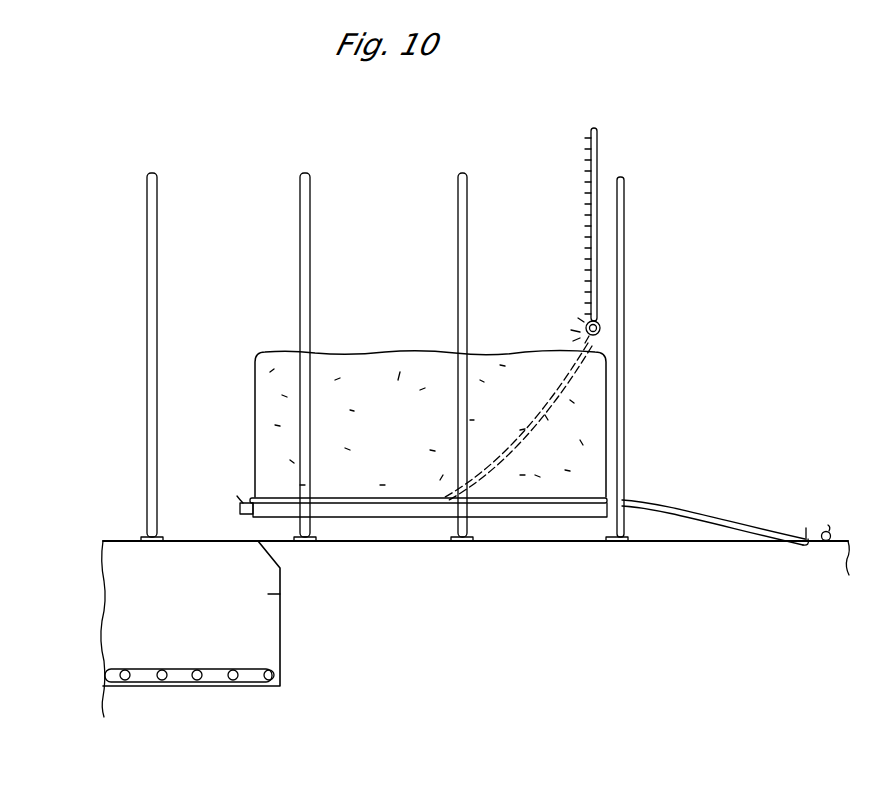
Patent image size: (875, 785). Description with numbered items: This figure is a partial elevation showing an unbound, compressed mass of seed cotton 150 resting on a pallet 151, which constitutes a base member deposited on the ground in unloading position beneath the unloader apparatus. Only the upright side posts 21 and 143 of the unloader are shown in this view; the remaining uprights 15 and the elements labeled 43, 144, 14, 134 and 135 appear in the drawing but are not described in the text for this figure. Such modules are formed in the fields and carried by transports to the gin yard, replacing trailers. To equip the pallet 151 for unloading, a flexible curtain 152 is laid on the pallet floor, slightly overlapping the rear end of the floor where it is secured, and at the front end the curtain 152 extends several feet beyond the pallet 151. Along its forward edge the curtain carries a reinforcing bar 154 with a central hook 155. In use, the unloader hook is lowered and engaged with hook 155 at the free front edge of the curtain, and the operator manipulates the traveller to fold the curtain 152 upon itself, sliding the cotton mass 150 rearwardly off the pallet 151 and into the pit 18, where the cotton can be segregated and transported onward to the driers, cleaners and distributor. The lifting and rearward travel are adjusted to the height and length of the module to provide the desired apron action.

The floor 14 is at (459, 615).
The pit 18 is at (191, 613).
The upright posts 15 is at (307, 357).
The upright side post 21 is at (645, 257).
The pallet 151 is at (508, 549).
The compressed mass of seed cotton 150 is at (430, 393).
The upright side post 143 is at (412, 420).
The flexible curtain 152 is at (522, 432).
The measuring scale 43 is at (591, 227).
The ring 144 is at (564, 306).
The central hook 155 is at (549, 320).
The reinforcing bar 154 is at (547, 332).
The hose 134 is at (715, 515).
The hose fitting 135 is at (825, 507).